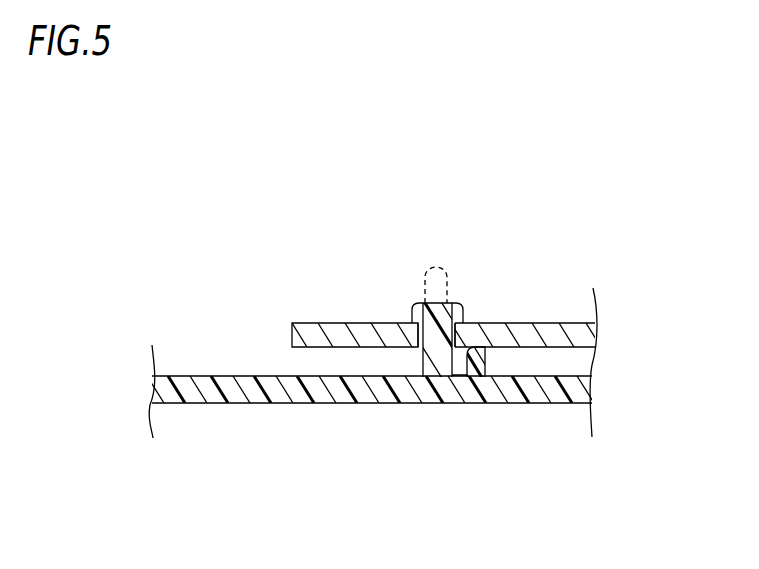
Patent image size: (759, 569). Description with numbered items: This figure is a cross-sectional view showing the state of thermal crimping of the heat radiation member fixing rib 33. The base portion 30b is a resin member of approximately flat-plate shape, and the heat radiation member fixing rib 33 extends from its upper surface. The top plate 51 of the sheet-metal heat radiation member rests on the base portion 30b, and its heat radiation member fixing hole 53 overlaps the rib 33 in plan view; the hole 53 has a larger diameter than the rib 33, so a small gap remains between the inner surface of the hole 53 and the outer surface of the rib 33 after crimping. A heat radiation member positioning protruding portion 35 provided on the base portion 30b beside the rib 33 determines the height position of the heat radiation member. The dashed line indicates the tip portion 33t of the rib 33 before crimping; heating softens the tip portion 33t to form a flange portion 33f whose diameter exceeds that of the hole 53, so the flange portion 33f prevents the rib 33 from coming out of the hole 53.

The base portion 30b is at (248, 392).
The top plate 51 is at (356, 335).
The heat radiation member fixing rib 33 is at (437, 350).
The flange portion 33f is at (414, 308).
The tip portion 33t is at (448, 268).
The heat radiation member positioning protruding portion 35 is at (477, 362).
The heat radiation member fixing hole 53 is at (421, 352).